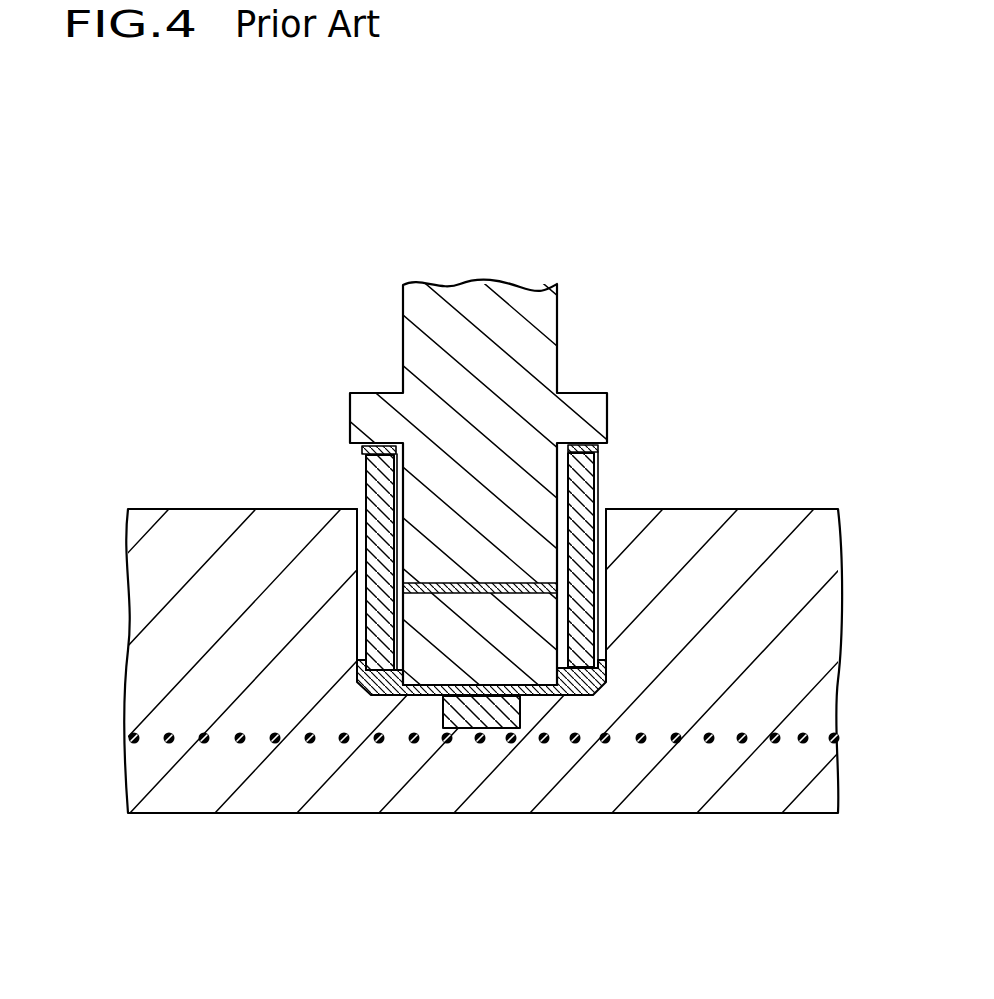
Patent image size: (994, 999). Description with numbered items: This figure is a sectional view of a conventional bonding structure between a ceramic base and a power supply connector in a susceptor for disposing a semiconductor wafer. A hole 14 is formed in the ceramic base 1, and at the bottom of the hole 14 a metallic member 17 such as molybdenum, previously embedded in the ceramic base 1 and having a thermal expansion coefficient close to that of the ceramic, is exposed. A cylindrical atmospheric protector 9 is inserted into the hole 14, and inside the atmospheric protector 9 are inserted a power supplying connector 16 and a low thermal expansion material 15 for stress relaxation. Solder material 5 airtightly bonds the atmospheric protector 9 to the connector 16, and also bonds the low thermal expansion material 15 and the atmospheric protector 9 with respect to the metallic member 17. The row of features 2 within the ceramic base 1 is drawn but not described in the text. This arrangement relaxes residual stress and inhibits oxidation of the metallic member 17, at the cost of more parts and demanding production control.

The ceramic base 1 is at (766, 530).
The passage holes 2 is at (678, 743).
The solder material 5 is at (364, 452).
The atmospheric protector 9 is at (584, 490).
The hole 14 is at (602, 600).
The low thermal expansion material 15 is at (431, 633).
The power supplying connector 16 is at (517, 338).
The metallic member 17 is at (504, 716).